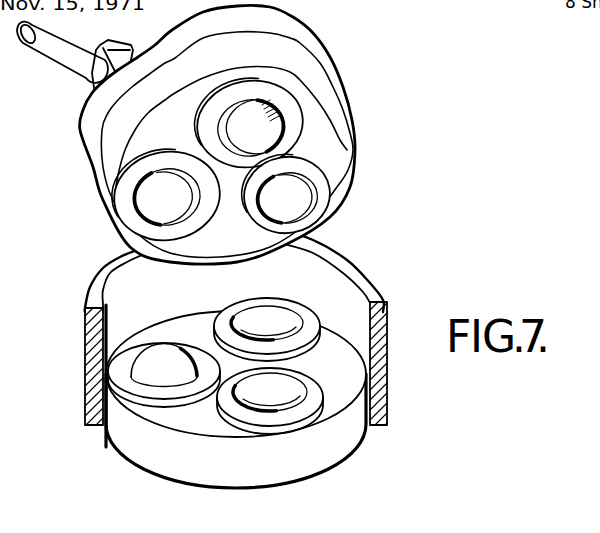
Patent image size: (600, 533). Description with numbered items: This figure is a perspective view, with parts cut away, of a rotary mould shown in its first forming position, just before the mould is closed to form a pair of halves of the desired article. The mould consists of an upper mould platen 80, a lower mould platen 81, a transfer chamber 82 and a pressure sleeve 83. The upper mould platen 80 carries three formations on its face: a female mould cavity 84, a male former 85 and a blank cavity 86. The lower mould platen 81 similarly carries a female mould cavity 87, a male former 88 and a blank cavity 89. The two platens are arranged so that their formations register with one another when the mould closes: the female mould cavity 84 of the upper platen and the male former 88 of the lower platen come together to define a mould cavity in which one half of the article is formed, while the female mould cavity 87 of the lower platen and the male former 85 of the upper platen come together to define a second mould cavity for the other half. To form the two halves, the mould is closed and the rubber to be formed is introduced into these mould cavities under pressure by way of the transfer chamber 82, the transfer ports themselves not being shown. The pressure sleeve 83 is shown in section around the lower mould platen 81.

The upper mould platen 80 is at (337, 163).
The lower mould platen 81 is at (187, 420).
The transfer chamber 82 is at (300, 33).
The pressure sleeve 83 is at (87, 300).
The female mould cavity 84 is at (153, 207).
The male former 85 is at (265, 128).
The blank cavity 86 is at (302, 207).
The female mould cavity 87 is at (290, 397).
The male former 88 is at (157, 370).
The blank cavity 89 is at (275, 318).